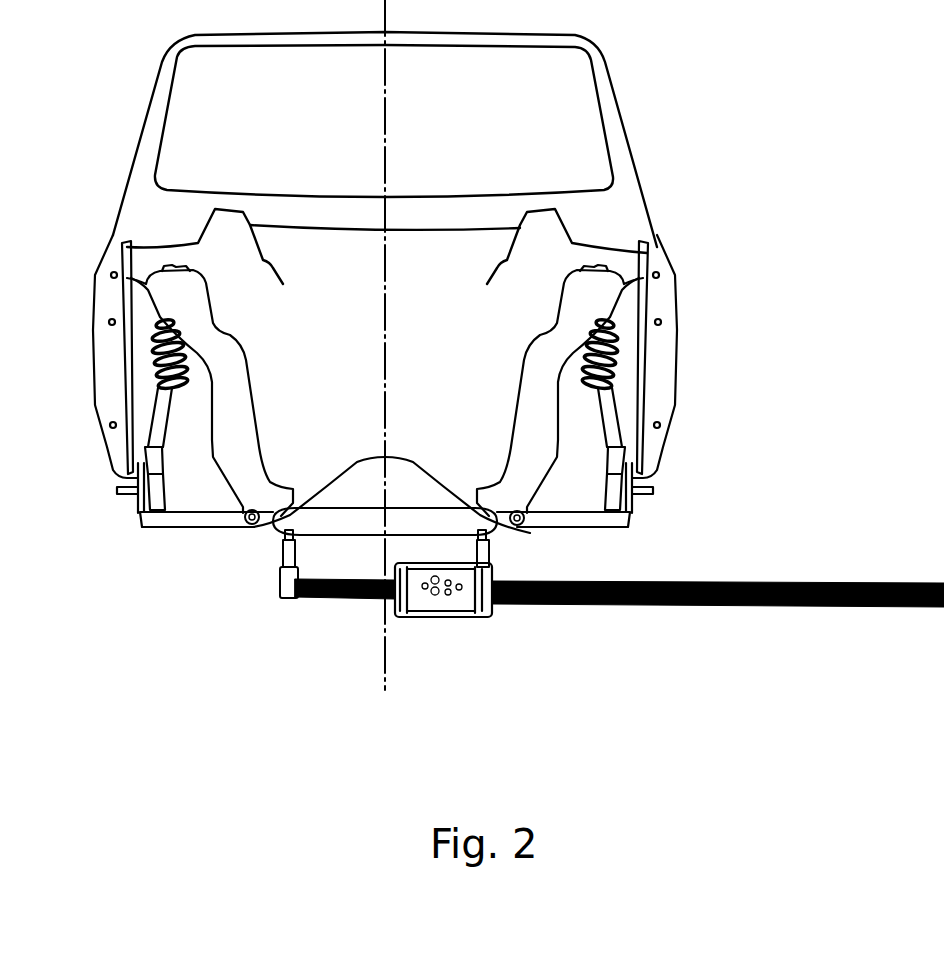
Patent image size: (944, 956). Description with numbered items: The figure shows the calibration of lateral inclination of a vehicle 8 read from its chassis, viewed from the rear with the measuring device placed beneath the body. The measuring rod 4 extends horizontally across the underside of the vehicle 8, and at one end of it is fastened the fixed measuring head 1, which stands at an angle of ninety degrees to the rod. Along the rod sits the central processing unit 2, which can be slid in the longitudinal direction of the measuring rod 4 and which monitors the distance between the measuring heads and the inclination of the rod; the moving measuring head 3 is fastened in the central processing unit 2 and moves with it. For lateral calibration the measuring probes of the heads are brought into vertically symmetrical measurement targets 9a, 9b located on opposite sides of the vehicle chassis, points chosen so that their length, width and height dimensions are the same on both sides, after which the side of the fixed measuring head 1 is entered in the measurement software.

The fixed measuring head 1 is at (282, 549).
The central processing unit 2 is at (455, 618).
The moving measuring head 3 is at (490, 548).
The measuring rod 4 is at (877, 607).
The vehicle 8 is at (618, 205).
The symmetrical measurement target 9a is at (277, 529).
The symmetrical measurement target 9b is at (497, 527).